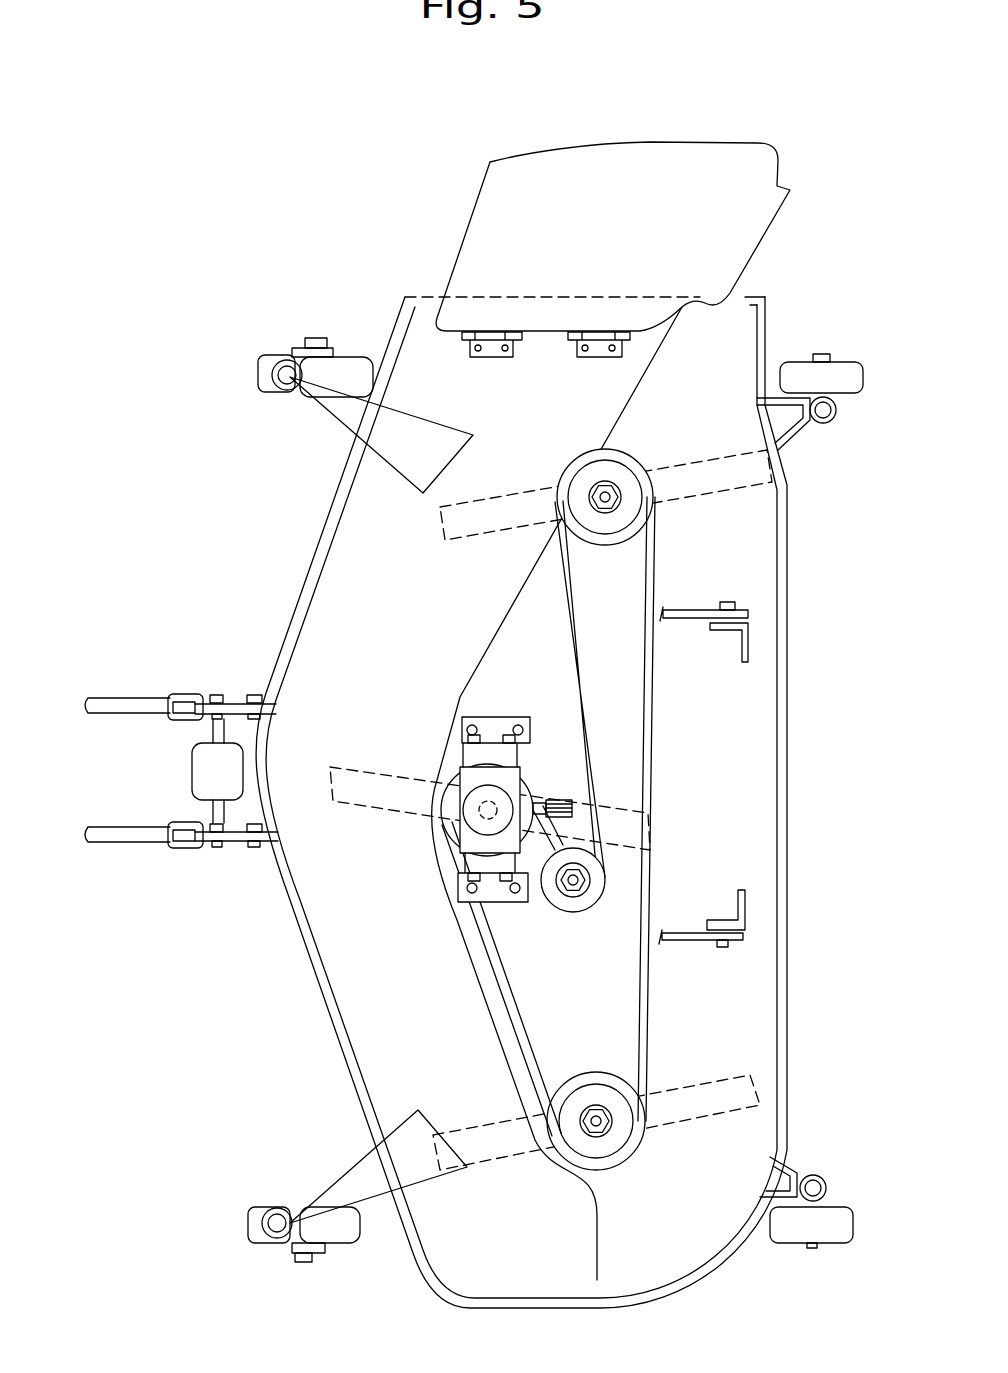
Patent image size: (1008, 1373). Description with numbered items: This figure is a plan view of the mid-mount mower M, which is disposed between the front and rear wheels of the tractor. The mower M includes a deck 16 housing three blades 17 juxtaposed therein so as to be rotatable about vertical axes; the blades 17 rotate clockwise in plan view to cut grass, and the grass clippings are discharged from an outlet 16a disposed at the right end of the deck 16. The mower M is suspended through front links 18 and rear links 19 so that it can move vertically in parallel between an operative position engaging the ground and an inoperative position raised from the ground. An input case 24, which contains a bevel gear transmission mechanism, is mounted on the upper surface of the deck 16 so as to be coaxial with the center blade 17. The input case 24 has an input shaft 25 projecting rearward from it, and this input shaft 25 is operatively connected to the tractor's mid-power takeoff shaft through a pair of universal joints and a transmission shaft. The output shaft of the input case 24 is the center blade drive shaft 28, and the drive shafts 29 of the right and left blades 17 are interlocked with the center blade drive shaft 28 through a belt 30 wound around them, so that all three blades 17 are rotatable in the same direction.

The deck 16 is at (763, 768).
The outlet 16a is at (497, 286).
The blades 17 is at (500, 500).
The front links 18 is at (125, 705).
The rear links 19 is at (697, 610).
The input case 24 is at (463, 838).
The input shaft 25 is at (563, 800).
The center blade drive shaft 28 is at (488, 803).
The drive shafts 29 is at (607, 490).
The belt 30 is at (652, 728).
The mid-mount mower M is at (292, 548).